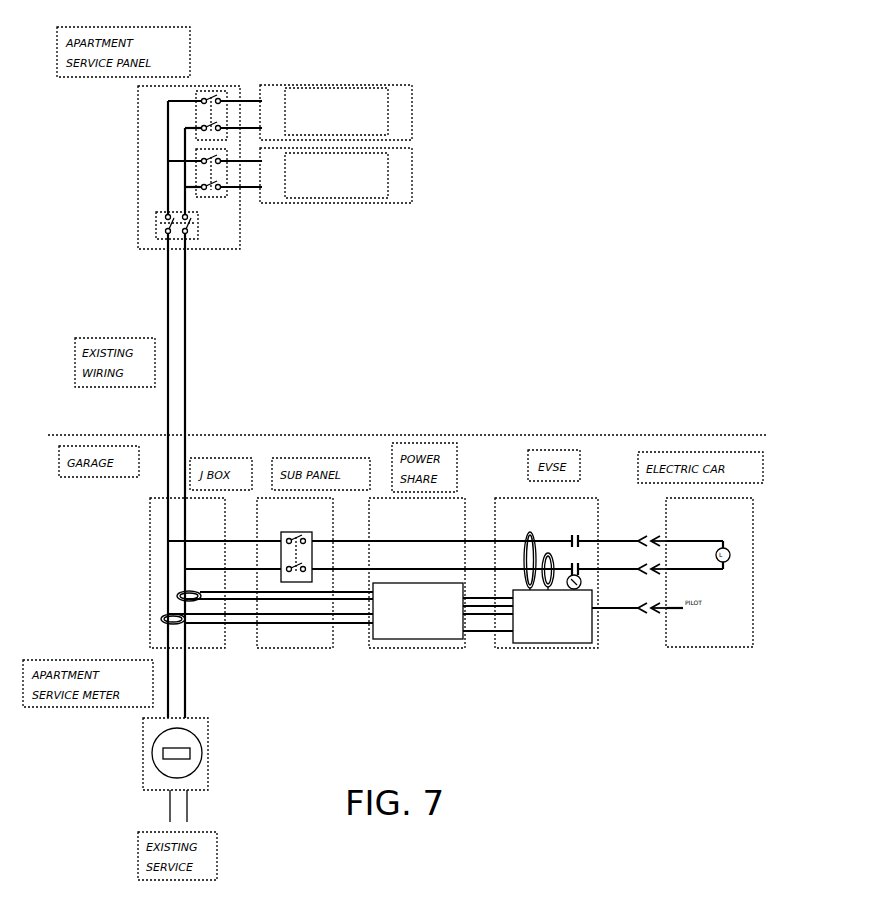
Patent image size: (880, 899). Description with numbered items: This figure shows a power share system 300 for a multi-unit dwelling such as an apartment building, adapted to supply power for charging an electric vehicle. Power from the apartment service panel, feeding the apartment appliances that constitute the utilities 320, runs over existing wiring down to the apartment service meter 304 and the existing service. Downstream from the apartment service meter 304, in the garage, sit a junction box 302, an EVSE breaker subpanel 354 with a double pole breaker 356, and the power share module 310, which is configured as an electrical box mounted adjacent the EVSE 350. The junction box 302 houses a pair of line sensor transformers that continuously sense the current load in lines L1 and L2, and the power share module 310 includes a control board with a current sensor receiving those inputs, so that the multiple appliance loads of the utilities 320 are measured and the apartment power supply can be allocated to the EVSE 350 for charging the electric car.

The power share system 300 is at (478, 232).
The junction box 302 is at (150, 533).
The apartment service meter 304 is at (208, 750).
The power share module 310 is at (395, 648).
The utilities 320 is at (420, 120).
The EVSE 350 is at (527, 648).
The EVSE breaker subpanel 354 is at (312, 546).
The double pole breaker 356 is at (288, 531).